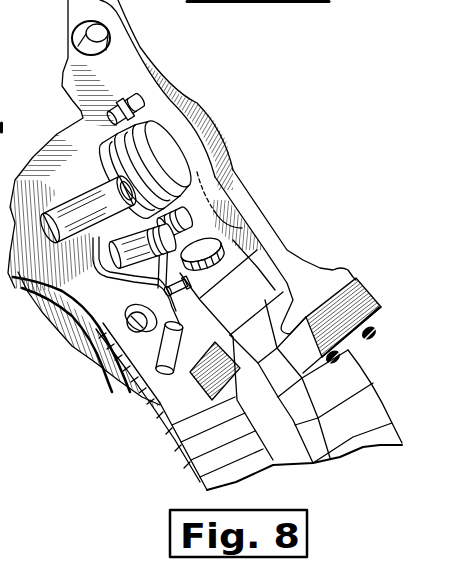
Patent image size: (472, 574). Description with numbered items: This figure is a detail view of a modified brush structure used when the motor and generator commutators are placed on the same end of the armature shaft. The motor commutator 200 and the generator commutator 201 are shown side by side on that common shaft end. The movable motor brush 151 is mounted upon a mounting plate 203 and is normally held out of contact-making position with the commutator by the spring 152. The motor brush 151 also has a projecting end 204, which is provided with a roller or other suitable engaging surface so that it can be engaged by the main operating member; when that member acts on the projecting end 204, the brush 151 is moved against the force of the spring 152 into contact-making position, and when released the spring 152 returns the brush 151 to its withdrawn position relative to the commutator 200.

The movable motor brush 151 is at (263, 233).
The spring 152 is at (157, 150).
The motor commutator 200 is at (291, 381).
The generator commutator 201 is at (210, 440).
The mounting plate 203 is at (172, 97).
The projecting end 204 is at (207, 207).